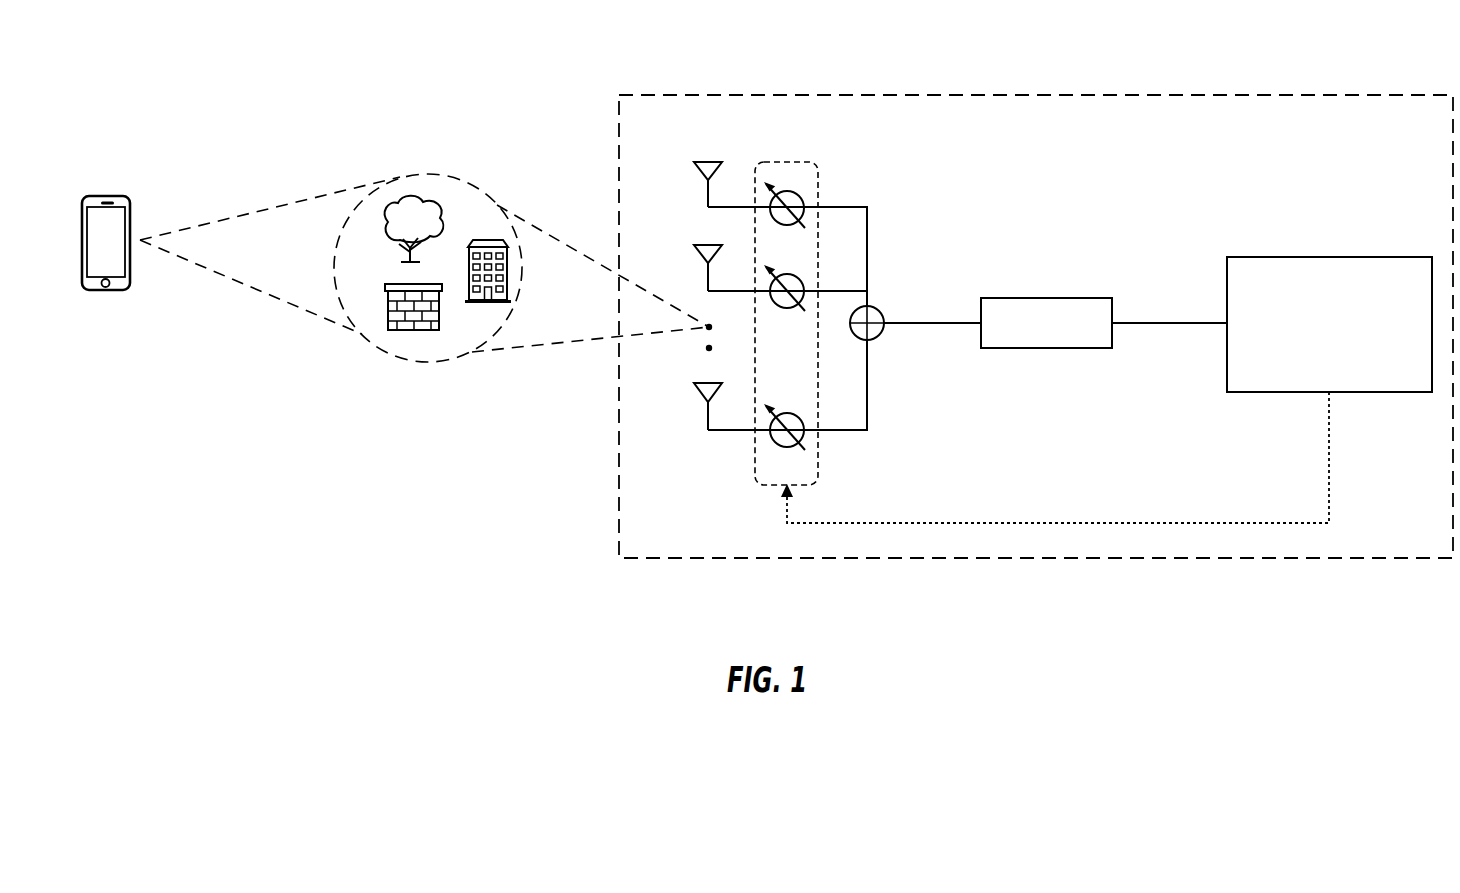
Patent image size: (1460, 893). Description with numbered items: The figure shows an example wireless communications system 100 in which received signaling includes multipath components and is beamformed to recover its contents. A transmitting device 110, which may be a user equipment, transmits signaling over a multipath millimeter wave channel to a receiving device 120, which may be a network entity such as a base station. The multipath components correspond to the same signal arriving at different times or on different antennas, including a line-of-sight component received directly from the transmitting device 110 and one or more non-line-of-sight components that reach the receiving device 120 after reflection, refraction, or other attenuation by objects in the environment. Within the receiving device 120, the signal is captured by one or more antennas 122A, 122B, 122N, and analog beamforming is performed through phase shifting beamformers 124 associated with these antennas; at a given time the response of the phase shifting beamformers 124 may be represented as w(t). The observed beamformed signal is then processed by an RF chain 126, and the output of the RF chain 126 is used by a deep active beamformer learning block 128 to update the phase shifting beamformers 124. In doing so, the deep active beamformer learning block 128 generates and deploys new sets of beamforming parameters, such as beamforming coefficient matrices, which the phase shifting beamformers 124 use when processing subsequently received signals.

The wireless communications system 100 is at (179, 42).
The transmitting device 110 is at (105, 195).
The receiving device 120 is at (1370, 94).
The antenna 122A is at (718, 162).
The antenna 122B is at (718, 245).
The antenna 122N is at (718, 383).
The phase shifting beamformer 124 is at (802, 162).
The RF chain 126 is at (1047, 298).
The deep active beamformer learning block 128 is at (1367, 257).